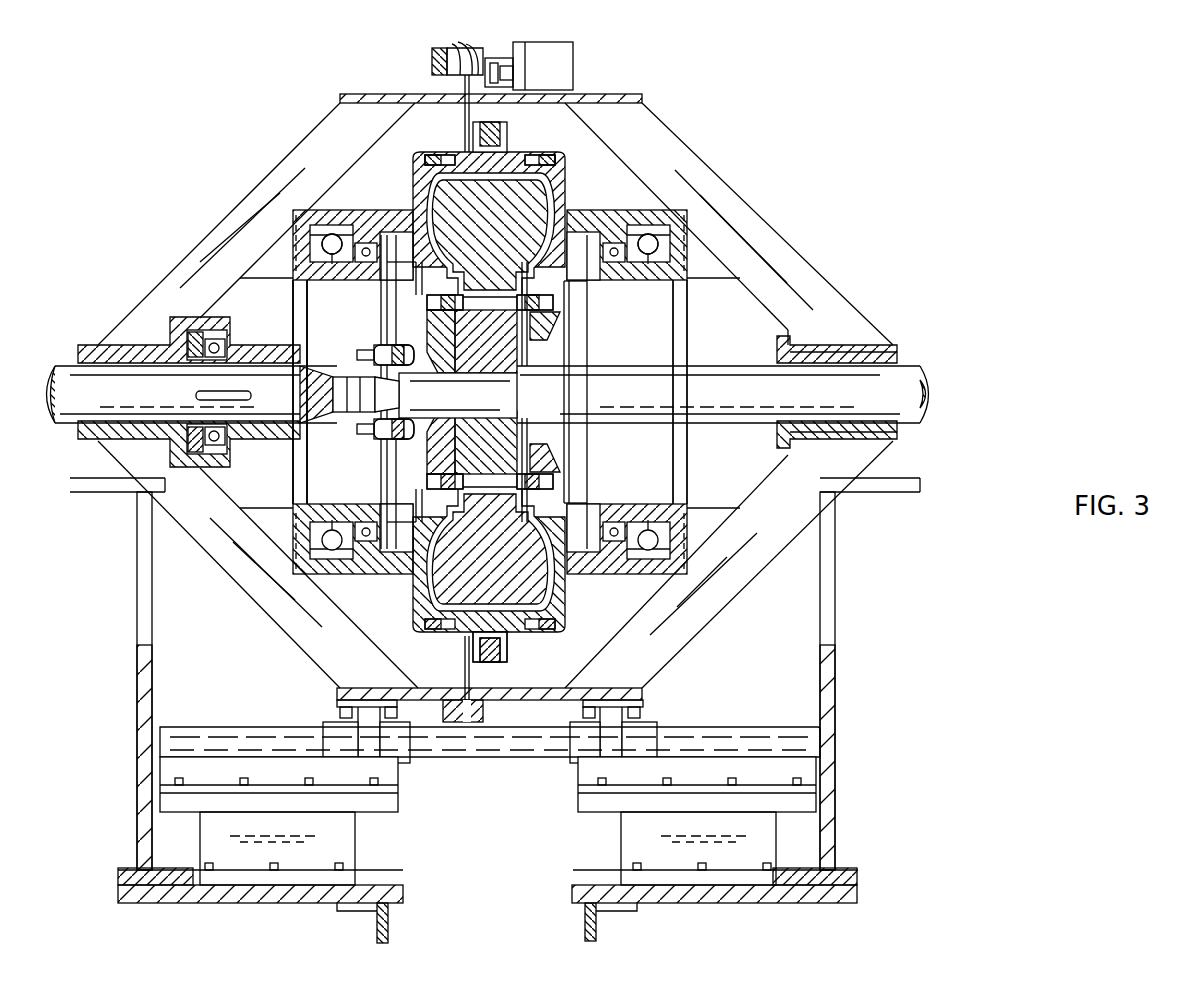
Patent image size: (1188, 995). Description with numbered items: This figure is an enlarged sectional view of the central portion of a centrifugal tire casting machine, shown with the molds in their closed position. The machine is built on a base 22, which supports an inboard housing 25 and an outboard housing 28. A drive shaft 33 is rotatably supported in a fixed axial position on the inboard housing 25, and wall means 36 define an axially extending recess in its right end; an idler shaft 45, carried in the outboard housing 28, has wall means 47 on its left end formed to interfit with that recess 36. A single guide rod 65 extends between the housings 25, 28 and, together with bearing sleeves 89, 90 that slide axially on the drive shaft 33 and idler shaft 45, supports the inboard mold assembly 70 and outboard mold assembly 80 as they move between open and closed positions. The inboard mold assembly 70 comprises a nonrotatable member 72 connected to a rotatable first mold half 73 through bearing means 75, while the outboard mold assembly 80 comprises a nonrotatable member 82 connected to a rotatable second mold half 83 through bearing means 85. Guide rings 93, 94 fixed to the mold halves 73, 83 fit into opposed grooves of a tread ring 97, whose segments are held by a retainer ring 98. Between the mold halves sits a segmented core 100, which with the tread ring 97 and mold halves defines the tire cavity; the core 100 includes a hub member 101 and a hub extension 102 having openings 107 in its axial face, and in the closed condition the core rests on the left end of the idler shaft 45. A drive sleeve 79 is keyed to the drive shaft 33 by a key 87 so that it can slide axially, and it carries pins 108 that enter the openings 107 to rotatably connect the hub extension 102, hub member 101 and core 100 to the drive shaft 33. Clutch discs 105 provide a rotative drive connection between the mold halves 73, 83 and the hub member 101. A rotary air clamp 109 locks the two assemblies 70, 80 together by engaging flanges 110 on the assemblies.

The base 22 is at (857, 876).
The inboard housing 25 is at (133, 688).
The outboard housing 28 is at (842, 660).
The drive shaft 33 is at (243, 367).
The wall means 36 is at (312, 381).
The idler shaft 45 is at (918, 378).
The wall means 47 is at (318, 399).
The guide rod 65 is at (510, 760).
The inboard mold assembly 70 is at (268, 145).
The nonrotatable member 72 is at (313, 272).
The first or inboard mold half 73 is at (401, 213).
The bearing means 75 is at (333, 258).
The drive sleeve 79 is at (309, 355).
The outboard mold assembly 80 is at (725, 148).
The nonrotatable member 82 is at (667, 275).
The second or outboard mold half 83 is at (579, 213).
The bearing means 85 is at (647, 258).
The key 87 is at (196, 393).
The bearing sleeve 89 is at (112, 348).
The bearing sleeve 90 is at (868, 352).
The guide ring 93 is at (444, 155).
The guide ring 94 is at (541, 155).
The tread ring 97 is at (508, 642).
The retainer ring 98 is at (500, 660).
The core 100 is at (540, 586).
The hub member 101 is at (498, 362).
The hub extension 102 is at (425, 337).
The clutch discs 105 is at (460, 303).
The openings 107 is at (395, 455).
The pins 108 is at (388, 378).
The rotary air clamp 109 is at (568, 63).
The flanges 110 is at (456, 68).